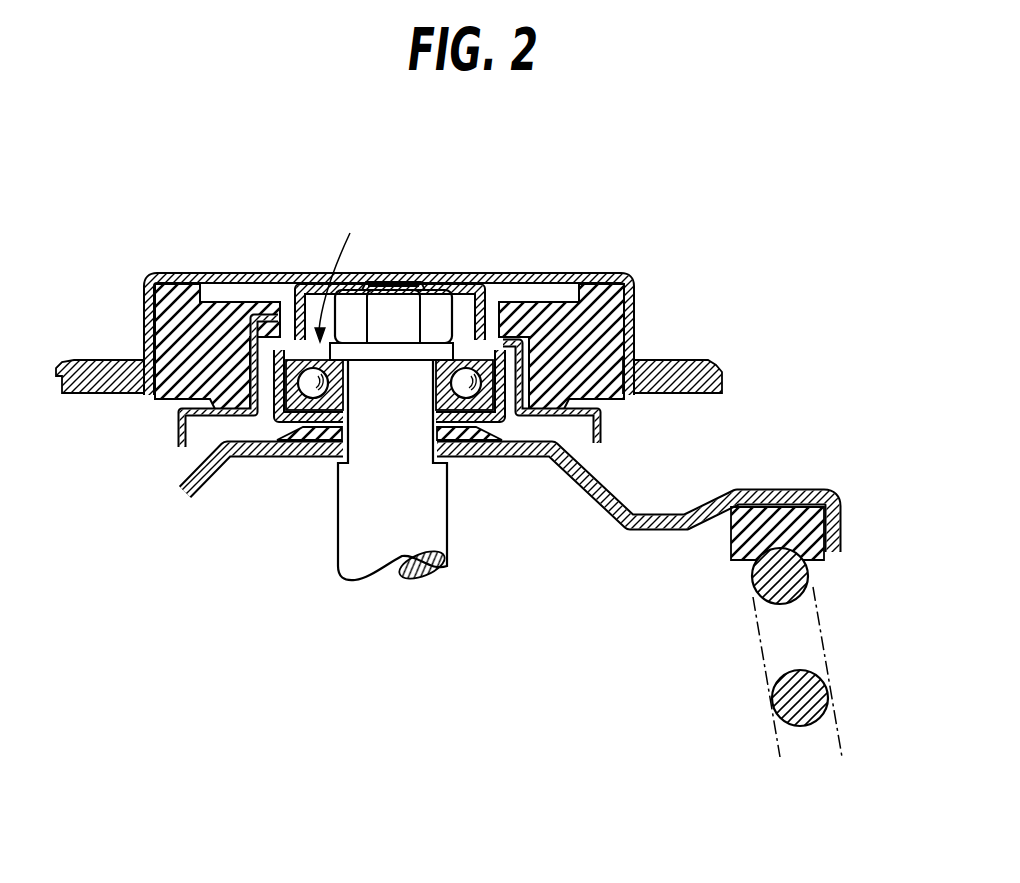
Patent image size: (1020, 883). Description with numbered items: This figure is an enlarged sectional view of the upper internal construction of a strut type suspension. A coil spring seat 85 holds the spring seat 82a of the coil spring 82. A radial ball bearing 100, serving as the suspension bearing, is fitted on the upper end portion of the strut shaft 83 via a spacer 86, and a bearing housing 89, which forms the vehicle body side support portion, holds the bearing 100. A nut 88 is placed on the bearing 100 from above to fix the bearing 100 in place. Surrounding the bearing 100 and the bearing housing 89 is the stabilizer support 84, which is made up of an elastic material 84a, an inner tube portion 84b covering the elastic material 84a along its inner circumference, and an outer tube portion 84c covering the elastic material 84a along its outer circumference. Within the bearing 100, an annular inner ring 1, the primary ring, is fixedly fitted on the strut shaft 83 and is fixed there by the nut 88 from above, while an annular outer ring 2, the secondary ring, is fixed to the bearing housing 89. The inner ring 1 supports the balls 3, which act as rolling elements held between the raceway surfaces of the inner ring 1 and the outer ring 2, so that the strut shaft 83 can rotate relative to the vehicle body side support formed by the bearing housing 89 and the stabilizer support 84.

The inner ring 1 is at (470, 453).
The outer ring 2 is at (518, 442).
The balls 3 is at (314, 398).
The coil spring 82 is at (812, 573).
The spring seat 82a is at (725, 550).
The strut shaft 83 is at (437, 547).
The stabilizer support 84 is at (385, 363).
The elastic material 84a is at (150, 393).
The inner tube portion 84b is at (240, 328).
The outer tube portion 84c is at (144, 312).
The coil spring seat 85 is at (207, 480).
The spacer 86 is at (313, 448).
The nut 88 is at (405, 287).
The bearing housing 89 is at (278, 282).
The radial ball bearing 100 is at (344, 270).